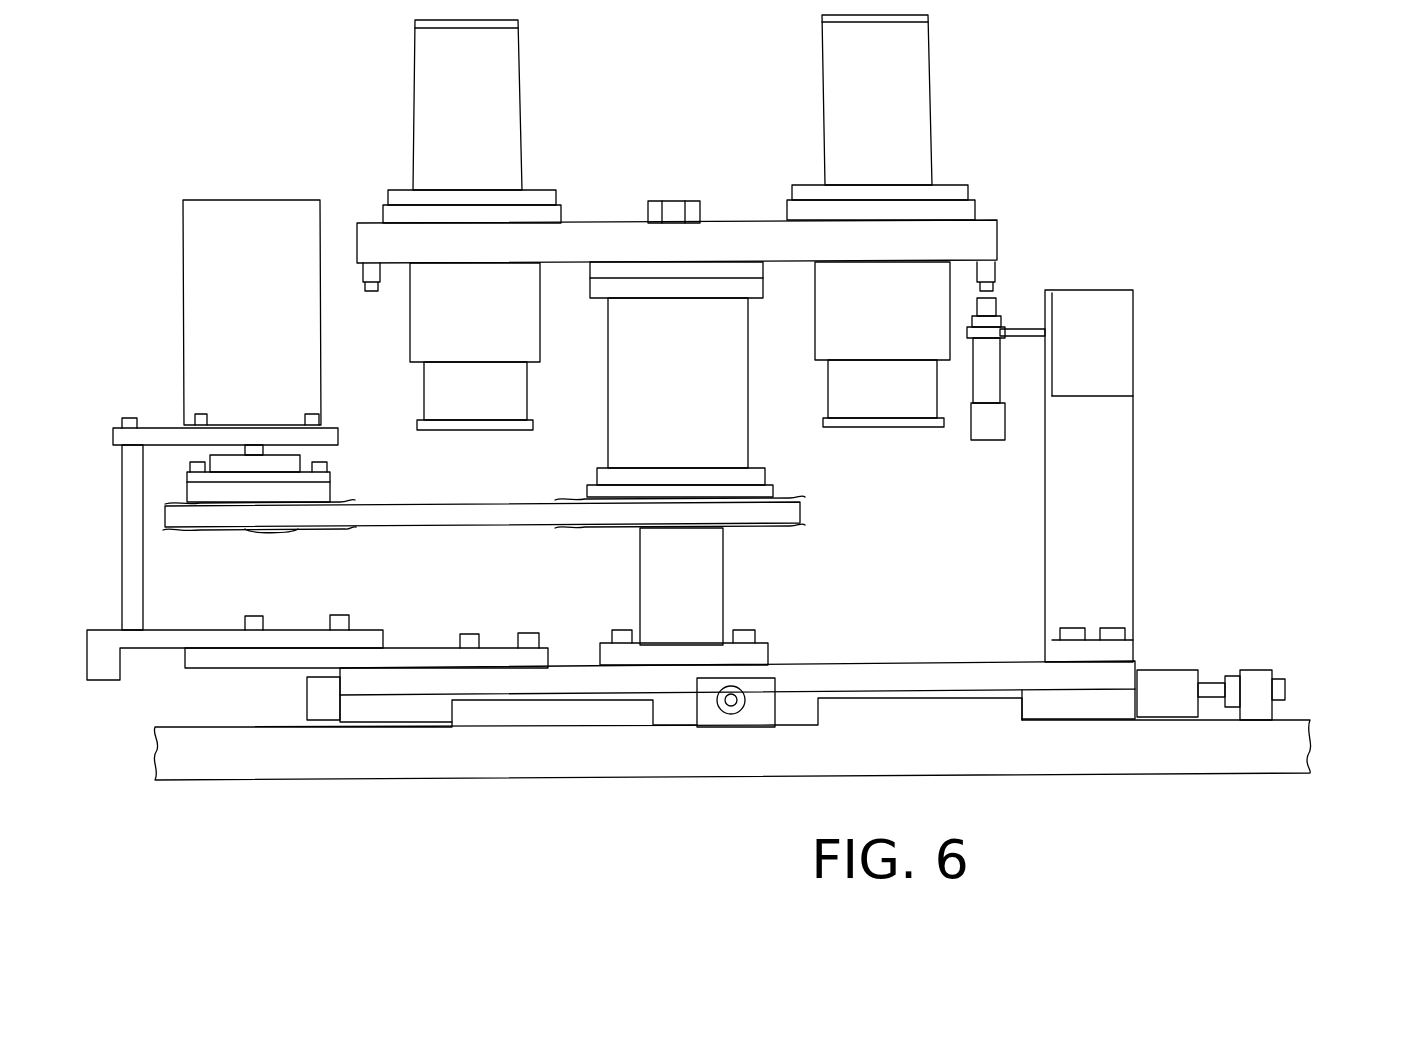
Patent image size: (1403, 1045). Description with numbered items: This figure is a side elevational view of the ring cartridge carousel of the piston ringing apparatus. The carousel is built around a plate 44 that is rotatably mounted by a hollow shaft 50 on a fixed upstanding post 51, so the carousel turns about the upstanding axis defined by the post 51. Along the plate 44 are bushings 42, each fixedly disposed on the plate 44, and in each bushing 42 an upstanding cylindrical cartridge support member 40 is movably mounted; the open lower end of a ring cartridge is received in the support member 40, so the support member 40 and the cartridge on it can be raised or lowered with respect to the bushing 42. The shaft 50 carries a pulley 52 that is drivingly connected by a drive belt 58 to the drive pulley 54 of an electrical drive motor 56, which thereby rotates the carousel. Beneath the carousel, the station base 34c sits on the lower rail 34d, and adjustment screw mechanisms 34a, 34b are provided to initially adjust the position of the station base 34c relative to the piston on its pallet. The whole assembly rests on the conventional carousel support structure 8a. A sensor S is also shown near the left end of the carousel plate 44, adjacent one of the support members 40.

The cylindrical cartridge support member 40 is at (679, 119).
The bushing 42 is at (680, 346).
The plate 44 is at (735, 234).
The hollow shaft 50 is at (680, 379).
The fixed upstanding post 51 is at (998, 305).
The pulley 52 is at (795, 530).
The drive pulley 54 is at (205, 532).
The electrical drive motor 56 is at (205, 316).
The drive belt 58 is at (447, 519).
The sensor S is at (372, 292).
The adjustment screw mechanism 34a is at (737, 708).
The adjustment screw mechanism 34b is at (1287, 690).
The station base 34c is at (611, 657).
The lower slide rail 34d is at (721, 701).
The carousel support structure 8a is at (381, 765).